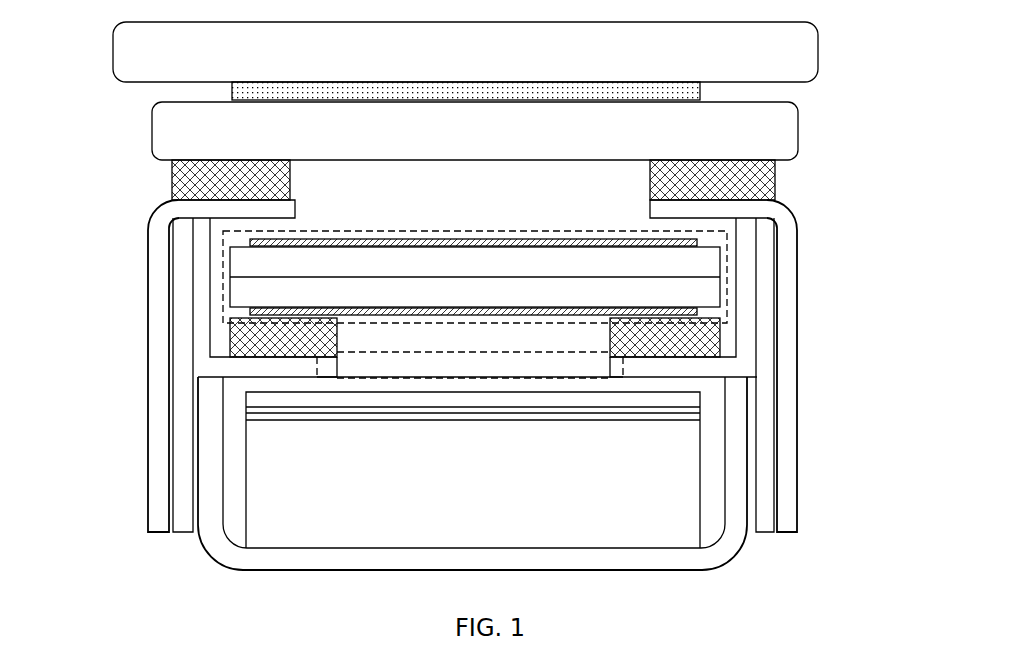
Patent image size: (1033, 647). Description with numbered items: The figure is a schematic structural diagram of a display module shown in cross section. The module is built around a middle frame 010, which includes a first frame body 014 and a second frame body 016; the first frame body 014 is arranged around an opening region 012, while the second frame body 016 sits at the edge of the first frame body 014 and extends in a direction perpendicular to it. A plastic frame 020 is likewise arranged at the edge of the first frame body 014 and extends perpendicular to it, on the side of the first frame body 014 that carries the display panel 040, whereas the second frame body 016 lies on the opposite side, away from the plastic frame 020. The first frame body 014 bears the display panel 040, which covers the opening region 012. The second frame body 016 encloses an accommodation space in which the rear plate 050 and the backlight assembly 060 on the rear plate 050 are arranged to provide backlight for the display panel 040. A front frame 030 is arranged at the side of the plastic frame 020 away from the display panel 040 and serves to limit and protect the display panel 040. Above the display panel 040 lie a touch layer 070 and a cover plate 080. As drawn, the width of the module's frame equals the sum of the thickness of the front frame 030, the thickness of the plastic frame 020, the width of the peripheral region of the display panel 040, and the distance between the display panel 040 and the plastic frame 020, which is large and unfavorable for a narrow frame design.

The cover plate 080 is at (163, 65).
The touch layer 070 is at (740, 145).
The display panel 040 is at (223, 280).
The plastic frame 020 is at (190, 348).
The front frame 030 is at (157, 413).
The rear plate 050 is at (290, 559).
The backlight assembly 060 is at (672, 513).
The middle frame 010 is at (579, 308).
The opening region 012 is at (700, 319).
The first frame body 014 is at (716, 367).
The second frame body 016 is at (596, 373).